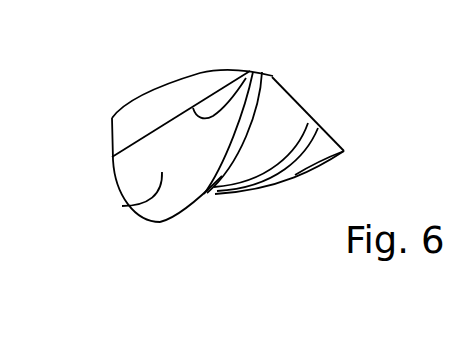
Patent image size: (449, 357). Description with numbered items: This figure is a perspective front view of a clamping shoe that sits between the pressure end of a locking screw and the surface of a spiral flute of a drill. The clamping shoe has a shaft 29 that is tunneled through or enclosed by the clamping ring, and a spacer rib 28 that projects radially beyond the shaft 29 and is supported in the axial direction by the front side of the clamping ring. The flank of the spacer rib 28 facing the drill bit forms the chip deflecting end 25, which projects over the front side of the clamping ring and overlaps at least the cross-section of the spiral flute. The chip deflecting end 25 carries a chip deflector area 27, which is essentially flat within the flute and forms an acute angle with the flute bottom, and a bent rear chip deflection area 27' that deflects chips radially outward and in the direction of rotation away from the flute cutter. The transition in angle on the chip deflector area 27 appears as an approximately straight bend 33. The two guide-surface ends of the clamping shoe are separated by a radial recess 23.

The radial recess 23 is at (218, 193).
The chip deflecting end 25 is at (151, 222).
The chip deflector area 27 is at (109, 172).
The rear chip deflection area 27' is at (158, 109).
The spacer rib 28 is at (213, 70).
The shaft 29 is at (299, 109).
The bend 33 is at (253, 73).